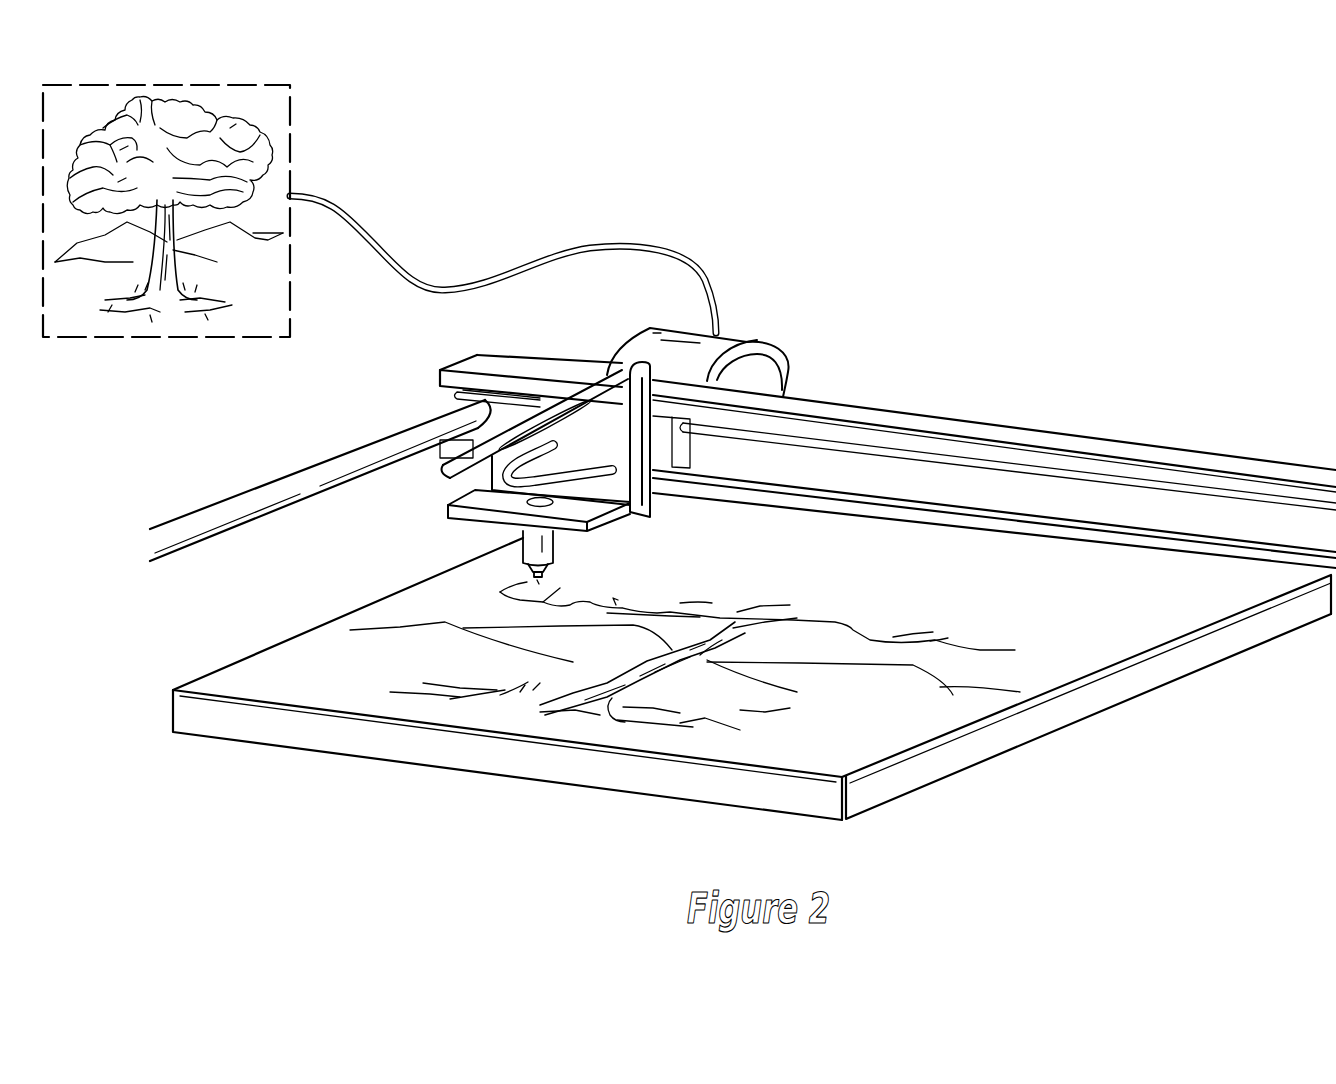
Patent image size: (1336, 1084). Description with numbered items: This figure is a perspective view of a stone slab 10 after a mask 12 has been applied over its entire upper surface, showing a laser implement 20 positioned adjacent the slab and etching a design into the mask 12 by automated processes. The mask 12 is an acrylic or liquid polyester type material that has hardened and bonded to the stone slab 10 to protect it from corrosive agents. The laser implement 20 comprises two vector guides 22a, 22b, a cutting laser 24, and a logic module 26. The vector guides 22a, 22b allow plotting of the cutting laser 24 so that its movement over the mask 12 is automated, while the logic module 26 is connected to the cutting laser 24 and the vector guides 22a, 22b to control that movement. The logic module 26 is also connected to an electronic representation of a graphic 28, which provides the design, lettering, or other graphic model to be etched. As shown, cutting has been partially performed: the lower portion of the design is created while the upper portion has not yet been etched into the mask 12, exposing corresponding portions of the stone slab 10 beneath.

The stone slab 10 is at (398, 780).
The mask 12 is at (972, 670).
The laser implement 20 is at (744, 320).
The vector guide 22a is at (287, 475).
The vector guide 22b is at (950, 450).
The cutting laser 24 is at (575, 556).
The logic module 26 is at (545, 405).
The electronic representation of a graphic 28 is at (283, 145).